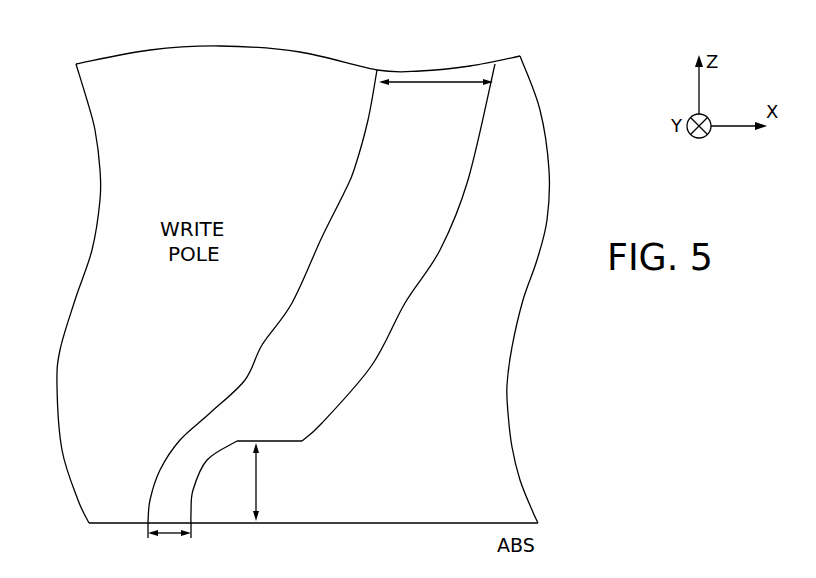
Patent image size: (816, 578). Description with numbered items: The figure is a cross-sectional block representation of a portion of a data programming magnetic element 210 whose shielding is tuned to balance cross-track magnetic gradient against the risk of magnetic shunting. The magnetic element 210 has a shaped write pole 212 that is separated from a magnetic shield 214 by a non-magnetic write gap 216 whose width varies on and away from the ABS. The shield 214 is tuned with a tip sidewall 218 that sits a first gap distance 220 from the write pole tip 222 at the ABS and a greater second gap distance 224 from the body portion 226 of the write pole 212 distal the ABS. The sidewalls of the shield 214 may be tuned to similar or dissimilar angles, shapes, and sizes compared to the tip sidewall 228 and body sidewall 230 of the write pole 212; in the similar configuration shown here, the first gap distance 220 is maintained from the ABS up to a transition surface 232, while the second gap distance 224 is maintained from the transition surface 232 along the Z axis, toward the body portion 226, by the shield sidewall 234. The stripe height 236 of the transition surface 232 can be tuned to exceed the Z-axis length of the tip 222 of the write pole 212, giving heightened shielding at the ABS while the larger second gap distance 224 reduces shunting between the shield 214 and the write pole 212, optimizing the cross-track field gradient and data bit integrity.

The magnetic element 210 is at (294, 266).
The write pole 212 is at (227, 86).
The magnetic shield 214 is at (515, 518).
The non-magnetic write gap 216 is at (291, 309).
The tip sidewall 218 is at (194, 505).
The first gap distance 220 is at (169, 543).
The write pole tip 222 is at (117, 440).
The second gap distance 224 is at (436, 94).
The body portion 226 is at (118, 160).
The tip sidewall of the write pole 228 is at (148, 503).
The body sidewall of the write pole 230 is at (362, 145).
The transition surface 232 is at (258, 440).
The shield sidewall 234 is at (372, 368).
The stripe height 236 is at (272, 482).